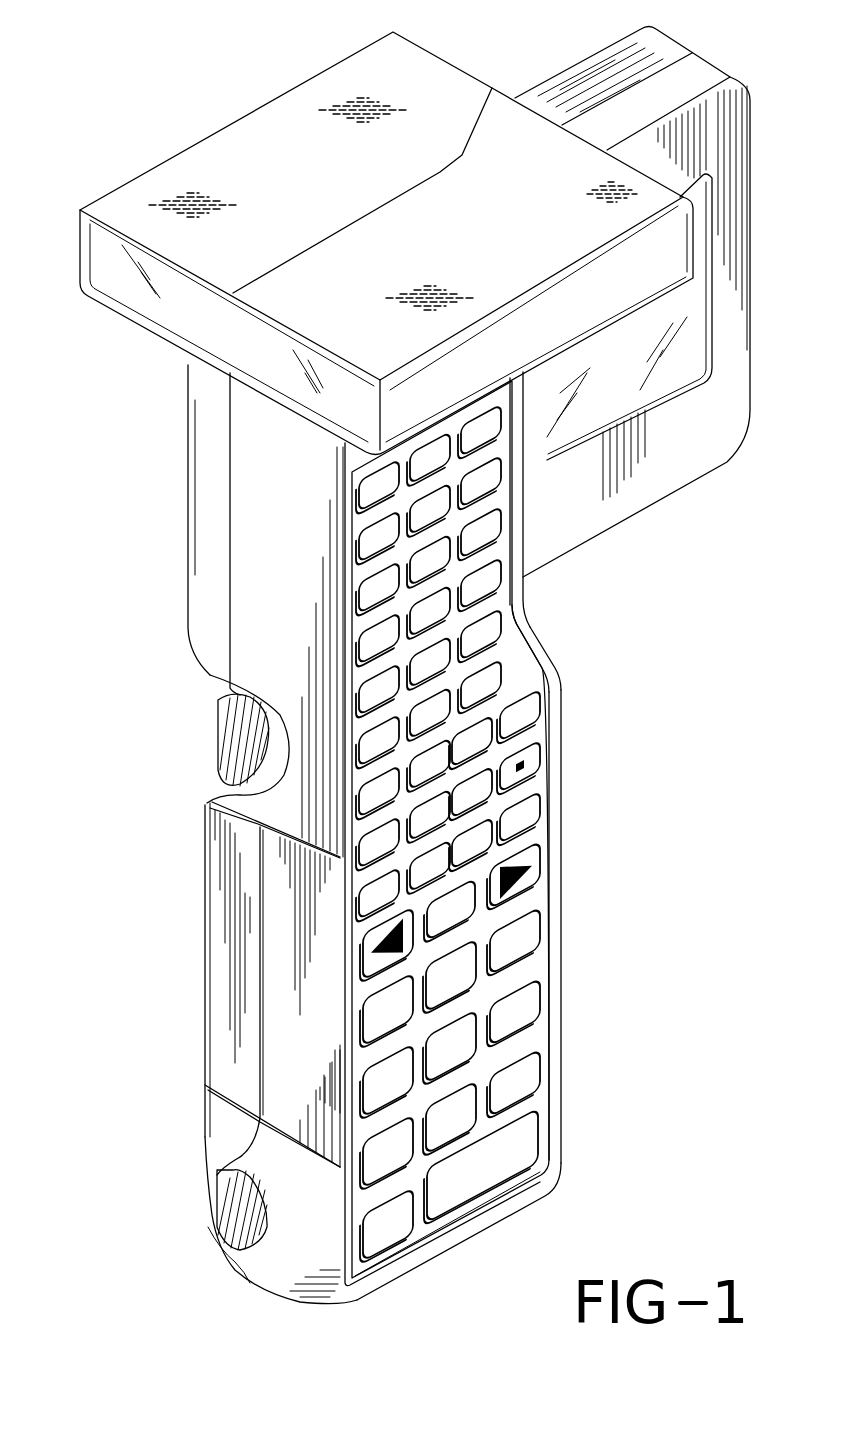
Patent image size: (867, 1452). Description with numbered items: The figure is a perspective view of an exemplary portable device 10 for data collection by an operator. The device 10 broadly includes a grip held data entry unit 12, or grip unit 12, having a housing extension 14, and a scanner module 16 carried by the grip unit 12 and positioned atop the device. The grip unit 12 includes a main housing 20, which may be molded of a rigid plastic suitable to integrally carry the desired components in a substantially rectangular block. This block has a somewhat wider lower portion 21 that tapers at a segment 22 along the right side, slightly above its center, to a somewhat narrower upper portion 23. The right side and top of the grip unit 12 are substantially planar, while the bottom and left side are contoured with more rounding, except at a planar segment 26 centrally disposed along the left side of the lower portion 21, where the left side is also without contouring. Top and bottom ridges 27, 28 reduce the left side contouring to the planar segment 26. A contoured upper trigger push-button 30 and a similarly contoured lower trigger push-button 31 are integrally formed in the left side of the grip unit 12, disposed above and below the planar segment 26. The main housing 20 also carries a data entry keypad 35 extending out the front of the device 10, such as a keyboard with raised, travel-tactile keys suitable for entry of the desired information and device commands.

The portable device 10 is at (405, 652).
The grip held data entry unit 12 is at (389, 806).
The housing extension 14 is at (697, 476).
The scanner module 16 is at (277, 98).
The main housing 20 is at (514, 793).
The lower portion 21 is at (562, 977).
The tapering segment 22 is at (540, 633).
The upper portion 23 is at (523, 547).
The planar segment 26 is at (222, 970).
The top ridge 27 is at (233, 810).
The bottom ridge 28 is at (230, 1112).
The upper trigger push-button 30 is at (233, 743).
The lower trigger push-button 31 is at (237, 1205).
The data entry keypad 35 is at (530, 1057).